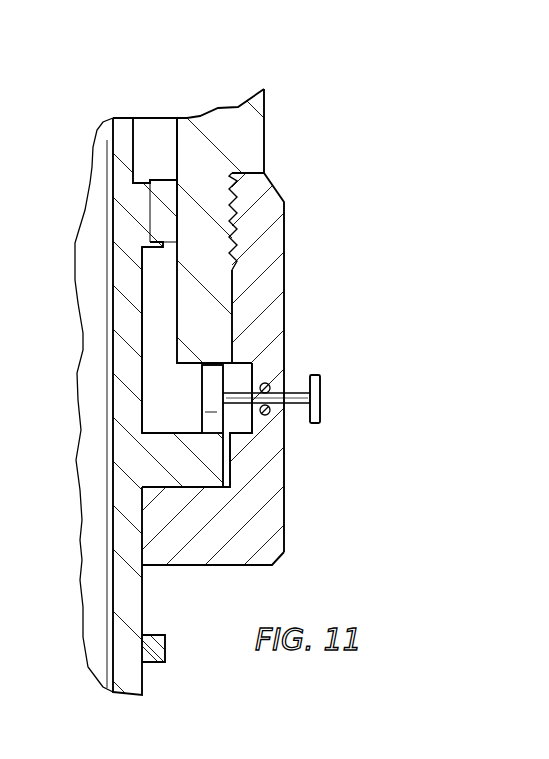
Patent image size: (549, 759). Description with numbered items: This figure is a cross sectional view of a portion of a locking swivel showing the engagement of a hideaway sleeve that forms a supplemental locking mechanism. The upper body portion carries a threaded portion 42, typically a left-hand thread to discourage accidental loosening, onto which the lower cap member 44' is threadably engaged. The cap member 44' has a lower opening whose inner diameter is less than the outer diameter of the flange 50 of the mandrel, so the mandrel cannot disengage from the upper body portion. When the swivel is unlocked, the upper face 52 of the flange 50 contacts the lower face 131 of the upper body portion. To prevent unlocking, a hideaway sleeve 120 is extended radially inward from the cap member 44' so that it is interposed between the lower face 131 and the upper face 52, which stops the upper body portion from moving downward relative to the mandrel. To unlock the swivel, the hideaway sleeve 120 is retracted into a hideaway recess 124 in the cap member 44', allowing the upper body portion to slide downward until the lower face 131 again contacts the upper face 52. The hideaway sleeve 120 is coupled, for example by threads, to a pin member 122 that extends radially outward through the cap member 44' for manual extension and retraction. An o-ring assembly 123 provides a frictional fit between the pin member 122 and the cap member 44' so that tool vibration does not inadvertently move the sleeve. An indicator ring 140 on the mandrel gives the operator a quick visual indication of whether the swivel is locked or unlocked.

The threaded portion 42 is at (237, 240).
The lower cap member 44' is at (274, 379).
The hideaway sleeve 120 is at (226, 377).
The pin member 122 is at (320, 400).
The o-ring assembly 123 is at (270, 417).
The hideaway recess 124 is at (242, 427).
The lower face 131 is at (190, 365).
The upper face 52 is at (120, 413).
The flange 50 is at (208, 487).
The indicator ring 140 is at (165, 647).